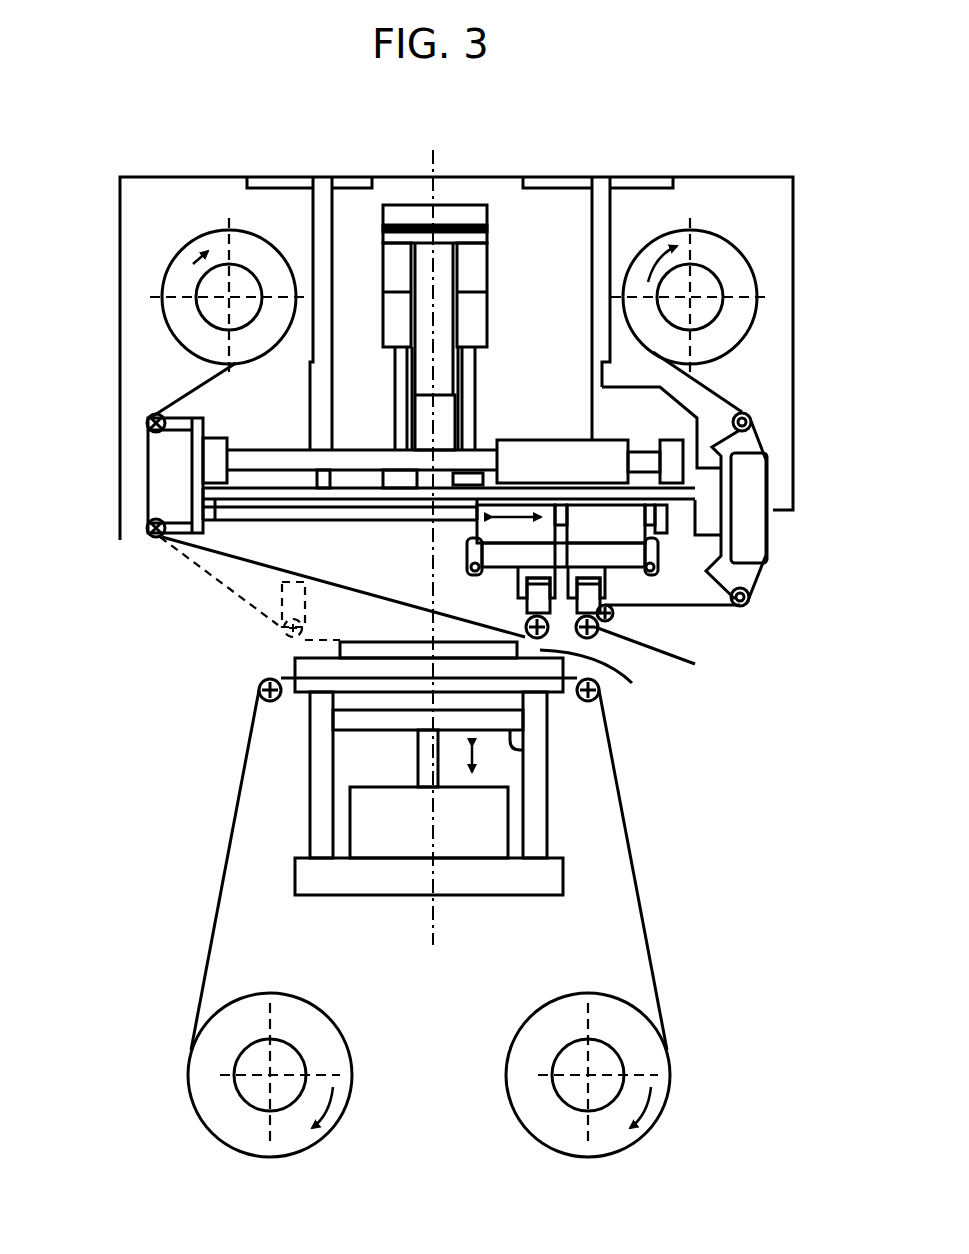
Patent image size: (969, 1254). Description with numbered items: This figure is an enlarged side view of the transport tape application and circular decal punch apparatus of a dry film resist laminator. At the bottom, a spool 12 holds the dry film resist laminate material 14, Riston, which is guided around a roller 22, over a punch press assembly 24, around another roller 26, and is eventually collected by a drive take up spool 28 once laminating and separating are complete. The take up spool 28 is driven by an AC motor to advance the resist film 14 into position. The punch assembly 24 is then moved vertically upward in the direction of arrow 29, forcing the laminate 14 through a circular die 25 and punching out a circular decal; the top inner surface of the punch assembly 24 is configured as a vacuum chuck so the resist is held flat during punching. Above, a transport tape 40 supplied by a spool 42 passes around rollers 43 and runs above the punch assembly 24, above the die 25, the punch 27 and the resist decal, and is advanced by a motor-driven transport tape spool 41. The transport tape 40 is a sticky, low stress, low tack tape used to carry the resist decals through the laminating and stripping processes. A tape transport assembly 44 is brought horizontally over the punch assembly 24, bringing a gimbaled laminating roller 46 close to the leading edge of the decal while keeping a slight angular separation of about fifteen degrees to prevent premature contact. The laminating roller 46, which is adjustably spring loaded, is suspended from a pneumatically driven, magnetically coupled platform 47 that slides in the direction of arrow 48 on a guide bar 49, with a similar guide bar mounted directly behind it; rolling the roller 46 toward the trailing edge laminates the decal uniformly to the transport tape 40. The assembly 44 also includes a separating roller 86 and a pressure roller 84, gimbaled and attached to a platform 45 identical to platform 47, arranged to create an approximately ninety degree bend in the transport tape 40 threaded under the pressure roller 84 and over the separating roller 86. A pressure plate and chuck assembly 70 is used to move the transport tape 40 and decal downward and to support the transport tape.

The spool 12 is at (326, 1015).
The dry film resist laminate material 14 is at (185, 900).
The roller 22 is at (270, 702).
The punch press assembly 24 is at (642, 668).
The circular die 25 is at (467, 768).
The roller 26 is at (588, 702).
The punch 27 is at (515, 749).
The drive take up spool 28 is at (545, 1013).
The arrow 29 is at (480, 762).
The transport tape 40 is at (200, 390).
The transport tape spool 41 is at (713, 246).
The spool 42 is at (215, 237).
The rollers 43 is at (148, 530).
The tape transport assembly 44 is at (178, 590).
The platform 45 is at (605, 527).
The gimbaled laminating roller 46 is at (522, 625).
The platform 47 is at (478, 527).
The arrow 48 is at (510, 515).
The guide bar 49 is at (352, 521).
The pressure plate and chuck assembly 70 is at (489, 393).
The pressure roller 84 is at (637, 655).
The separating roller 86 is at (615, 616).